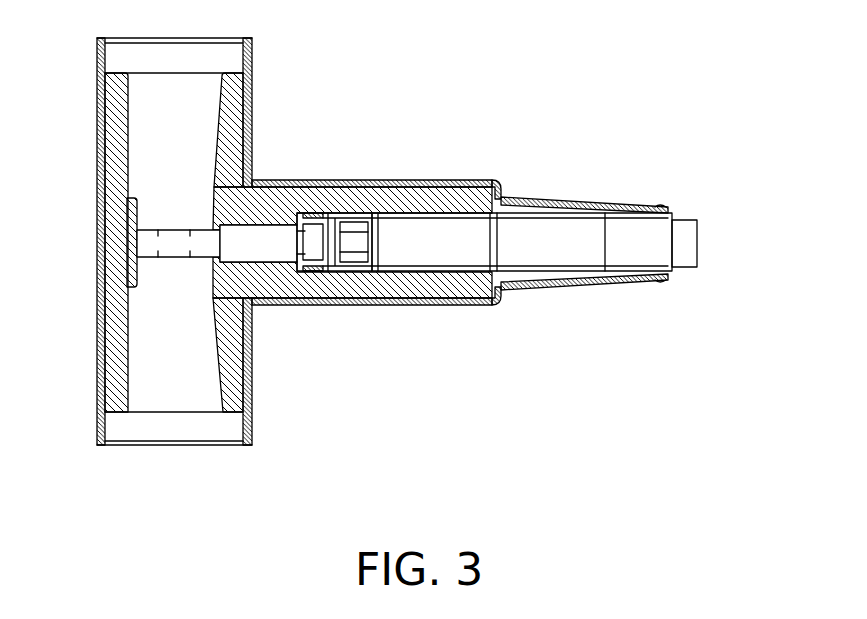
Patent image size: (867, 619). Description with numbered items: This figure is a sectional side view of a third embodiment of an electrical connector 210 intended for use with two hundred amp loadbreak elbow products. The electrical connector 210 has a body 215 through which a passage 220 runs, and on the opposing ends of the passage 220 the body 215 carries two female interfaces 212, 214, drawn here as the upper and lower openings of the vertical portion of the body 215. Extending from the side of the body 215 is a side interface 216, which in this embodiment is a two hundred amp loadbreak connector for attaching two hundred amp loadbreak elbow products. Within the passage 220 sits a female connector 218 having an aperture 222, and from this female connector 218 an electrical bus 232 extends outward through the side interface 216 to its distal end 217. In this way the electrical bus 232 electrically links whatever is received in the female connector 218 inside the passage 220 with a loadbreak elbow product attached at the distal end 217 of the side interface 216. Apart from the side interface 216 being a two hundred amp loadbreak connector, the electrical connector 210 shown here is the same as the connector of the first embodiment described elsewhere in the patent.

The electrical connector 210 is at (97, 140).
The female interface 212 is at (227, 40).
The female interface 214 is at (133, 447).
The body 215 is at (252, 370).
The side interface 216 is at (640, 207).
The distal end 217 is at (697, 243).
The female connector 218 is at (128, 243).
The passage 220 is at (162, 157).
The aperture 222 is at (177, 230).
The electrical bus 232 is at (253, 242).